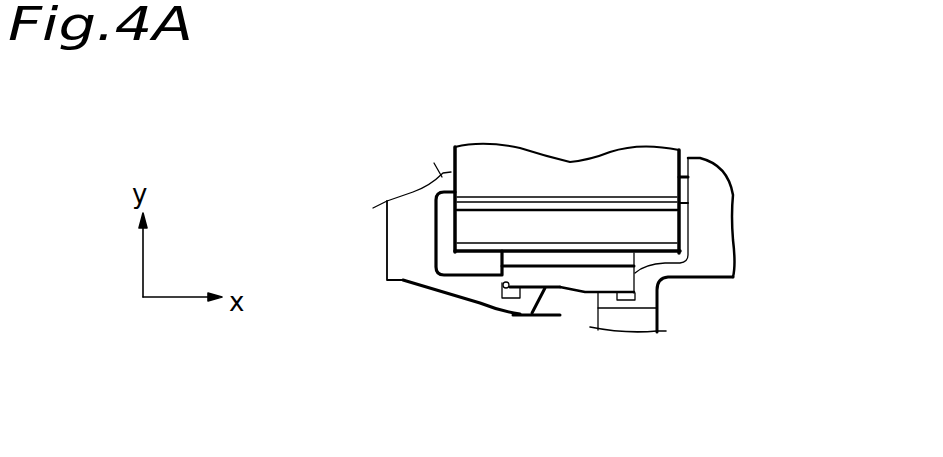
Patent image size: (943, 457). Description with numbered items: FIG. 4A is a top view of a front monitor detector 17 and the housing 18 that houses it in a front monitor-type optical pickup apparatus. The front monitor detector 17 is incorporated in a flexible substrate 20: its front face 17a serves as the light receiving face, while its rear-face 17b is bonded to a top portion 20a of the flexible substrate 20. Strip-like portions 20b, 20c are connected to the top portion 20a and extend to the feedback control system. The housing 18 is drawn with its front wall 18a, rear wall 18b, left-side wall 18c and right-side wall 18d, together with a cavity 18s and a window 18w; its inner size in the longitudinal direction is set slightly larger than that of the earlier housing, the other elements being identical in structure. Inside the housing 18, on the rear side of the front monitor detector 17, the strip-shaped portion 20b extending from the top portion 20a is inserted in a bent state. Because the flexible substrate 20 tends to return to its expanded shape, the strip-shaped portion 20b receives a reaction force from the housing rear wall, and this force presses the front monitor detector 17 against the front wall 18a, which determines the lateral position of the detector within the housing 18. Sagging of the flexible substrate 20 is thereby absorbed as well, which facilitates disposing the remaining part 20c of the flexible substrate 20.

The front monitor detector 17 is at (530, 250).
The front face 17a is at (575, 292).
The rear-face 17b is at (556, 250).
The housing 18 is at (417, 257).
The front wall 18a is at (520, 321).
The rear wall 18b is at (452, 178).
The left-side wall 18c is at (398, 237).
The right-side wall 18d is at (718, 245).
The cavity 18s is at (500, 286).
The window 18w is at (572, 316).
The flexible substrate 20 is at (658, 218).
The top portion 20a is at (672, 284).
The strip-shaped portion 20b is at (628, 218).
The remaining part 20c is at (592, 167).